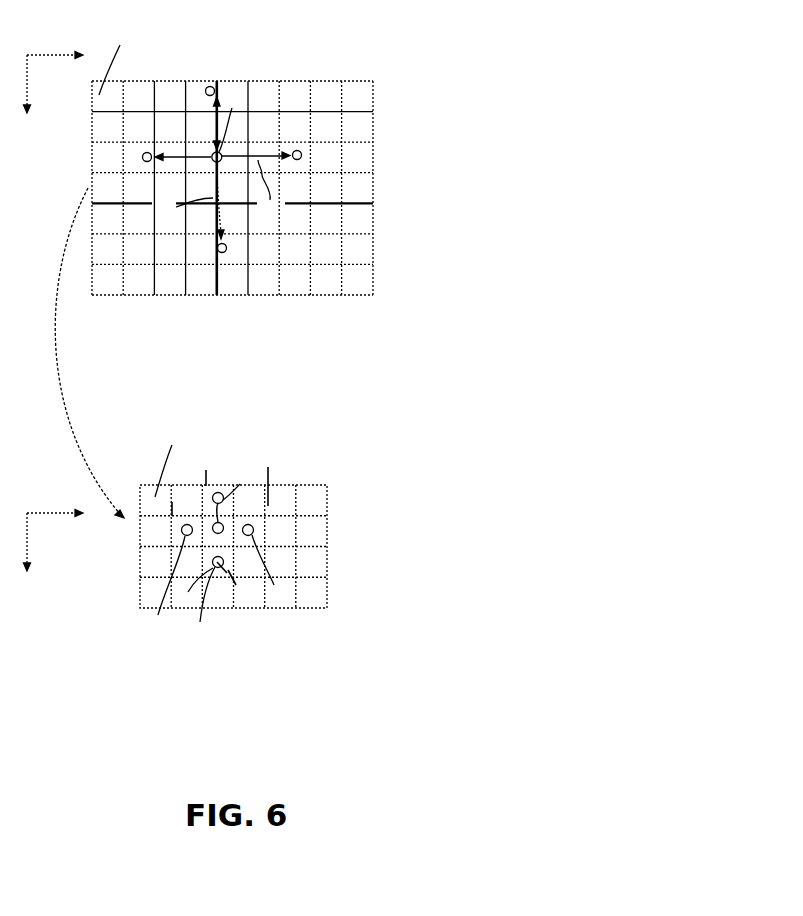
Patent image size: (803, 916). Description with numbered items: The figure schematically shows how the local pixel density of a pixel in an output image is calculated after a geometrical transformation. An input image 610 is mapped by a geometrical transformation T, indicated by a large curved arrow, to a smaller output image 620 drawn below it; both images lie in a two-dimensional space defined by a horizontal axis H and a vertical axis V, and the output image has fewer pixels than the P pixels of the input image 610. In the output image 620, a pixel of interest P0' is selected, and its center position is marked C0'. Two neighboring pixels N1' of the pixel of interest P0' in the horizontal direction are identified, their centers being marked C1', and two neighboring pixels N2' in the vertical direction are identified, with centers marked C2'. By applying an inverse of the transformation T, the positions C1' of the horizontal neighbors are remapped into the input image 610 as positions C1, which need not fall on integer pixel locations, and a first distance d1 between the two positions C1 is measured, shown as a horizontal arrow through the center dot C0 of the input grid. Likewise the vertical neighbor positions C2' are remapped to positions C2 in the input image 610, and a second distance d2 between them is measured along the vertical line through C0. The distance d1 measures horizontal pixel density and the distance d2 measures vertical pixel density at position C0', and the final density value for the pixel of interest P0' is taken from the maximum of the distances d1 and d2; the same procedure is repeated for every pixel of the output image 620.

The input image 610 is at (430, 146).
The output image 620 is at (358, 503).
The pixels of input image P is at (137, 264).
The center pixel C0 is at (229, 127).
The position in input image corresponding to horizontal neighboring pixel C1 is at (233, 126).
The position in input image corresponding to vertical neighboring pixel C2 is at (229, 172).
The first distance d1 is at (268, 188).
The second distance d2 is at (183, 206).
The geometrical transformation T is at (52, 352).
The horizontal axis H is at (62, 284).
The vertical axis V is at (19, 322).
The position of pixel of interest C0' is at (234, 487).
The positions of horizontal neighboring pixels C1' is at (214, 583).
The positions of vertical neighboring pixels C2' is at (217, 538).
The neighboring pixels in horizontal direction N1' is at (226, 489).
The neighboring pixels in vertical direction N2' is at (230, 531).
The pixel of interest P0' is at (201, 583).